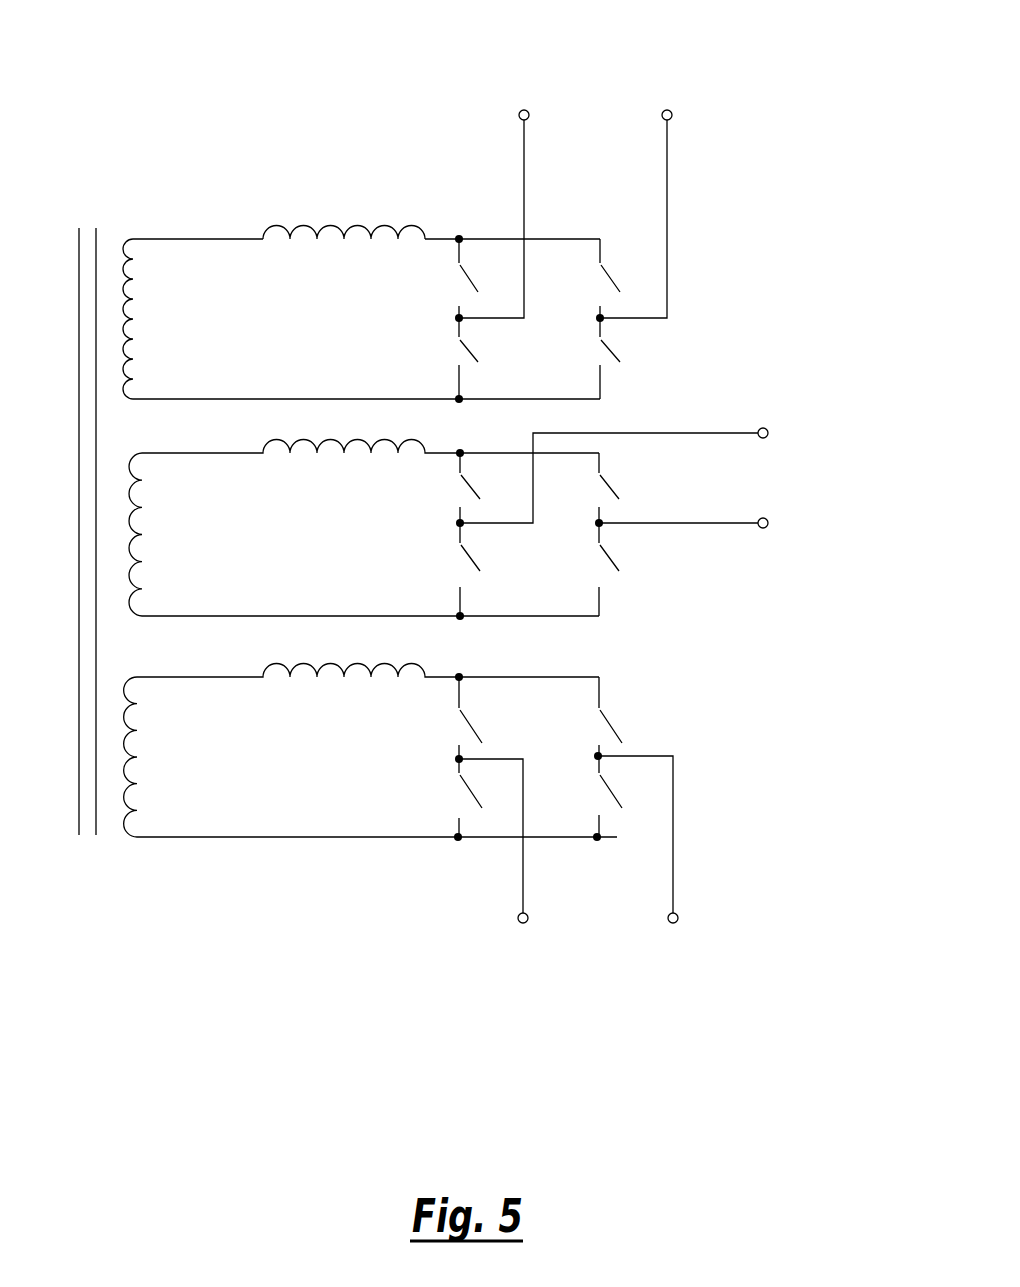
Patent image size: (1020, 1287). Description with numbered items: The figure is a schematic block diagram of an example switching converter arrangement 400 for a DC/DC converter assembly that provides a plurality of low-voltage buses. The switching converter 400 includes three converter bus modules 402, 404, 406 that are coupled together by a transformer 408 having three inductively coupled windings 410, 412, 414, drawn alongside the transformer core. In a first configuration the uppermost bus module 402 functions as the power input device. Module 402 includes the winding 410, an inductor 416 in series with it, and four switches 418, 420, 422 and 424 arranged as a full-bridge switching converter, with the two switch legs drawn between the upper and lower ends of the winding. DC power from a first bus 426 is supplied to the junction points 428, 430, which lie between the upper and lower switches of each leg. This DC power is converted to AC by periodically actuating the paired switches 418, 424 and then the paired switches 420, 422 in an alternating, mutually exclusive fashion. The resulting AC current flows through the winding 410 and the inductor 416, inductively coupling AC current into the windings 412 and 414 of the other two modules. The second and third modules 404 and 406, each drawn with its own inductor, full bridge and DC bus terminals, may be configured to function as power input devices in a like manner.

The switching converter arrangement 400 is at (221, 111).
The converter bus module 402 is at (766, 305).
The converter bus module 404 is at (860, 439).
The converter bus module 406 is at (709, 716).
The transformer 408 is at (78, 198).
The winding 410 is at (133, 320).
The winding 412 is at (142, 535).
The winding 414 is at (137, 754).
The inductor 416 is at (331, 226).
The switch 418 is at (462, 274).
The switch 420 is at (466, 347).
The switch 422 is at (607, 274).
The switch 424 is at (605, 347).
The first bus 426 is at (539, 60).
The junction point 428 is at (458, 318).
The junction point 430 is at (601, 320).